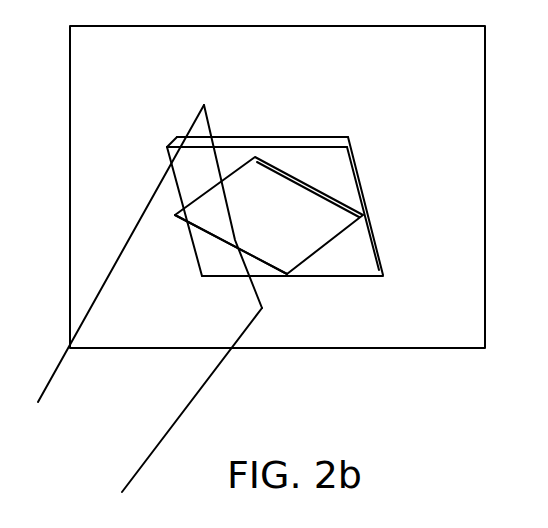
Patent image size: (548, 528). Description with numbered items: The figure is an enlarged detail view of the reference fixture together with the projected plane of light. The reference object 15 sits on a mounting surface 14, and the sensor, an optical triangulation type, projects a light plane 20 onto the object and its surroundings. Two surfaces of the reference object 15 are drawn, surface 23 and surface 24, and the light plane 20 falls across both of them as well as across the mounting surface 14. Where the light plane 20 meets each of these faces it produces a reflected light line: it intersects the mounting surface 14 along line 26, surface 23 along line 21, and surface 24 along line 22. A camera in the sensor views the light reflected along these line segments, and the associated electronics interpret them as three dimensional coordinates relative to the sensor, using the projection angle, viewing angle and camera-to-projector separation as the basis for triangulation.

The mounting surface 14 is at (418, 77).
The reference object 15 is at (365, 183).
The light plane 20 is at (218, 368).
The line 21 is at (210, 166).
The line 22 is at (222, 225).
The surface 23 is at (355, 257).
The surface 24 is at (290, 250).
The line 26 is at (208, 112).